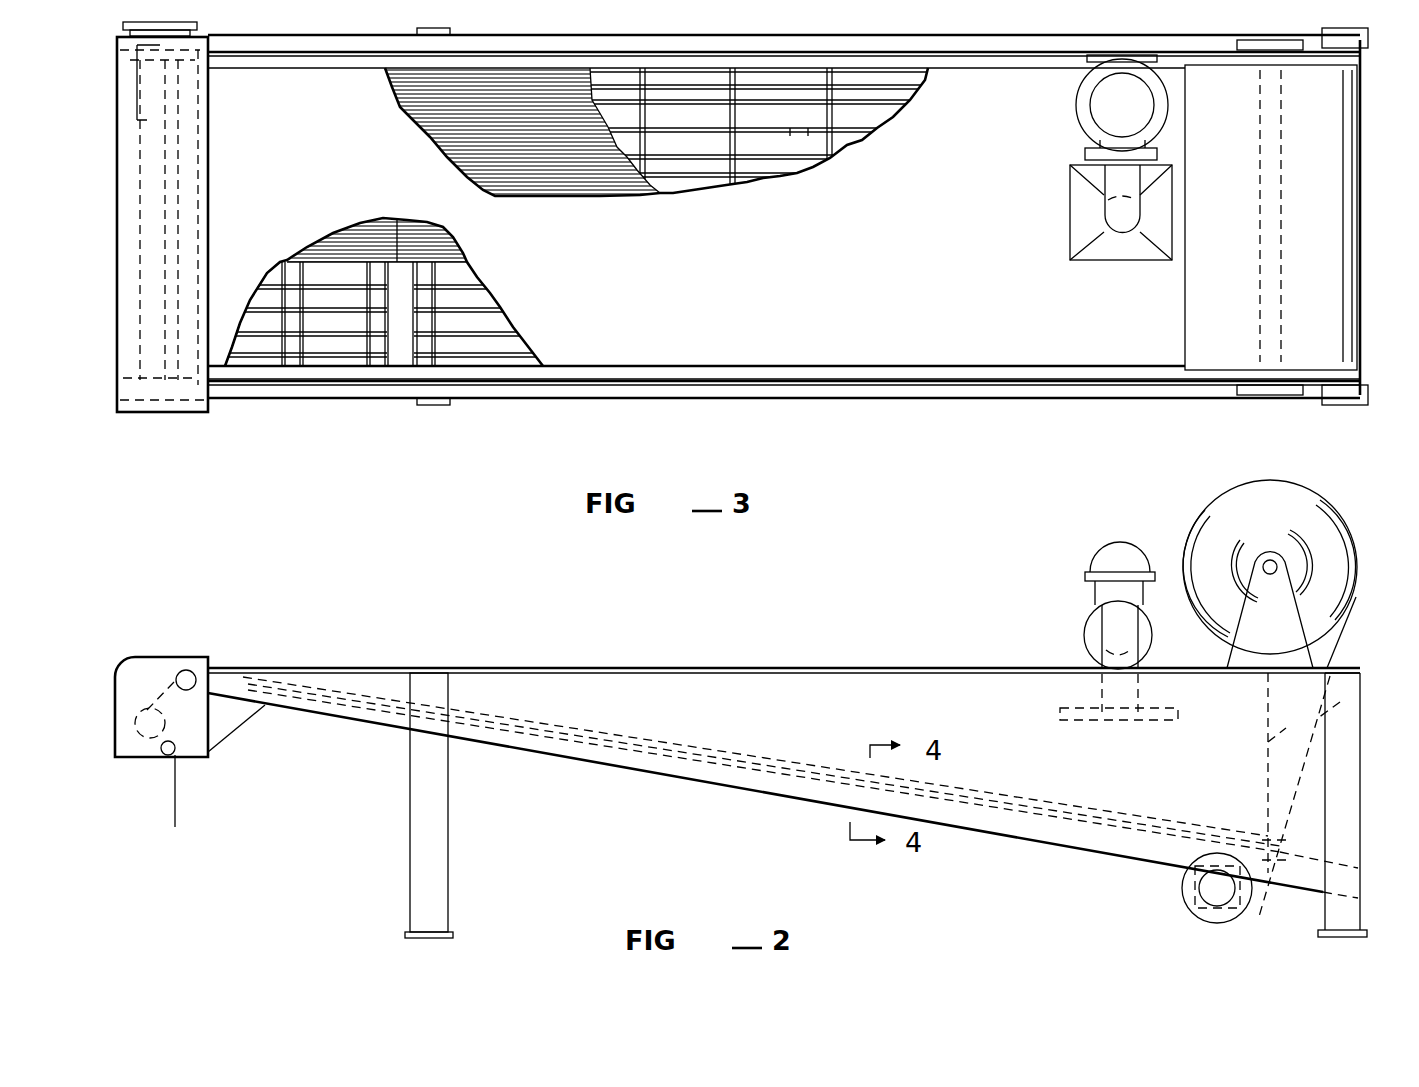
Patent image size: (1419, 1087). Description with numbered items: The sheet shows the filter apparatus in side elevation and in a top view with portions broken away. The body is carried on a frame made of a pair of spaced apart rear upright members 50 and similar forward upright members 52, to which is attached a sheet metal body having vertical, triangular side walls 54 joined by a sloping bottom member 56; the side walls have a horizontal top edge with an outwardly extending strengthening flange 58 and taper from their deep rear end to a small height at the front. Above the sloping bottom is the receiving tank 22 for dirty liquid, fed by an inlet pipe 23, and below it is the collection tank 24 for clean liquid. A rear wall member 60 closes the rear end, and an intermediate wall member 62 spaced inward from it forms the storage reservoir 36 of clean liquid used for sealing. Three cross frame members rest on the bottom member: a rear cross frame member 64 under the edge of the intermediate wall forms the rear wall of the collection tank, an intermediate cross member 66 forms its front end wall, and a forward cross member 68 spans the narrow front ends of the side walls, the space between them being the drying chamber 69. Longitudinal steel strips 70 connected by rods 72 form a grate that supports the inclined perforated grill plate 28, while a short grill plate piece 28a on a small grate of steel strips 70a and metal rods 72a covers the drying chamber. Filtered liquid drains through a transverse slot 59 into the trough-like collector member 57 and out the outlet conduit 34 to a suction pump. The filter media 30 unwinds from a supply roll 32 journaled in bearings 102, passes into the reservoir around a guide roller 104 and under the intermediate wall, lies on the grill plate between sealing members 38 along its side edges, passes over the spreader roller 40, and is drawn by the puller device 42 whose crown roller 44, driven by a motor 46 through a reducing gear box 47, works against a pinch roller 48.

In FIG. 2, the receiving tank 22 is at (988, 697).
In FIG. 3, the inlet pipe 23 is at (1102, 195).
In FIG. 2, the inlet pipe 23 is at (1102, 612).
In FIG. 2, the collection tank 24 is at (1064, 833).
In FIG. 3, the inclined perforated grill plate 28 is at (621, 172).
In FIG. 3, the short piece of grill plate 28a is at (357, 260).
In FIG. 3, the filter media 30 is at (816, 312).
In FIG. 2, the supply roll 32 is at (1208, 508).
In FIG. 2, the outlet conduit 34 is at (1195, 906).
In FIG. 2, the storage reservoir 36 is at (1348, 634).
In FIG. 3, the sealing members 38 is at (983, 62).
In FIG. 2, the spreader roller 40 is at (188, 668).
In FIG. 3, the puller device 42 is at (148, 426).
In FIG. 2, the crown roller 44 is at (140, 742).
In FIG. 3, the motor 46 is at (133, 128).
In FIG. 3, the reducing gear box 47 is at (123, 50).
In FIG. 2, the pinch roller 48 is at (166, 758).
In FIG. 2, the upright members 50 is at (1343, 833).
In FIG. 2, the forward upright members 52 is at (448, 837).
In FIG. 2, the side walls 54 is at (765, 729).
In FIG. 3, the sloping bottom member 56 is at (700, 137).
In FIG. 2, the sloping bottom member 56 is at (700, 778).
In FIG. 2, the collector member 57 is at (1190, 893).
In FIG. 3, the strengthening flange 58 is at (945, 392).
In FIG. 2, the strengthening flange 58 is at (740, 669).
In FIG. 2, the transverse slot 59 is at (1285, 815).
In FIG. 2, the rear wall member 60 is at (1360, 760).
In FIG. 2, the intermediate wall member 62 is at (1345, 700).
In FIG. 2, the rear cross frame member 64 is at (1285, 800).
In FIG. 3, the intermediate cross member 66 is at (402, 347).
In FIG. 2, the intermediate cross member 66 is at (383, 707).
In FIG. 3, the forward cross member 68 is at (272, 348).
In FIG. 2, the forward cross member 68 is at (287, 705).
In FIG. 2, the drying chamber 69 is at (317, 707).
In FIG. 3, the steel strips 70 is at (808, 153).
In FIG. 3, the steel strips 70a is at (350, 333).
In FIG. 3, the rods 72 is at (735, 160).
In FIG. 3, the metal rods 72a is at (373, 345).
In FIG. 2, the bearings 102 is at (1245, 597).
In FIG. 2, the guide roller 104 is at (1352, 868).